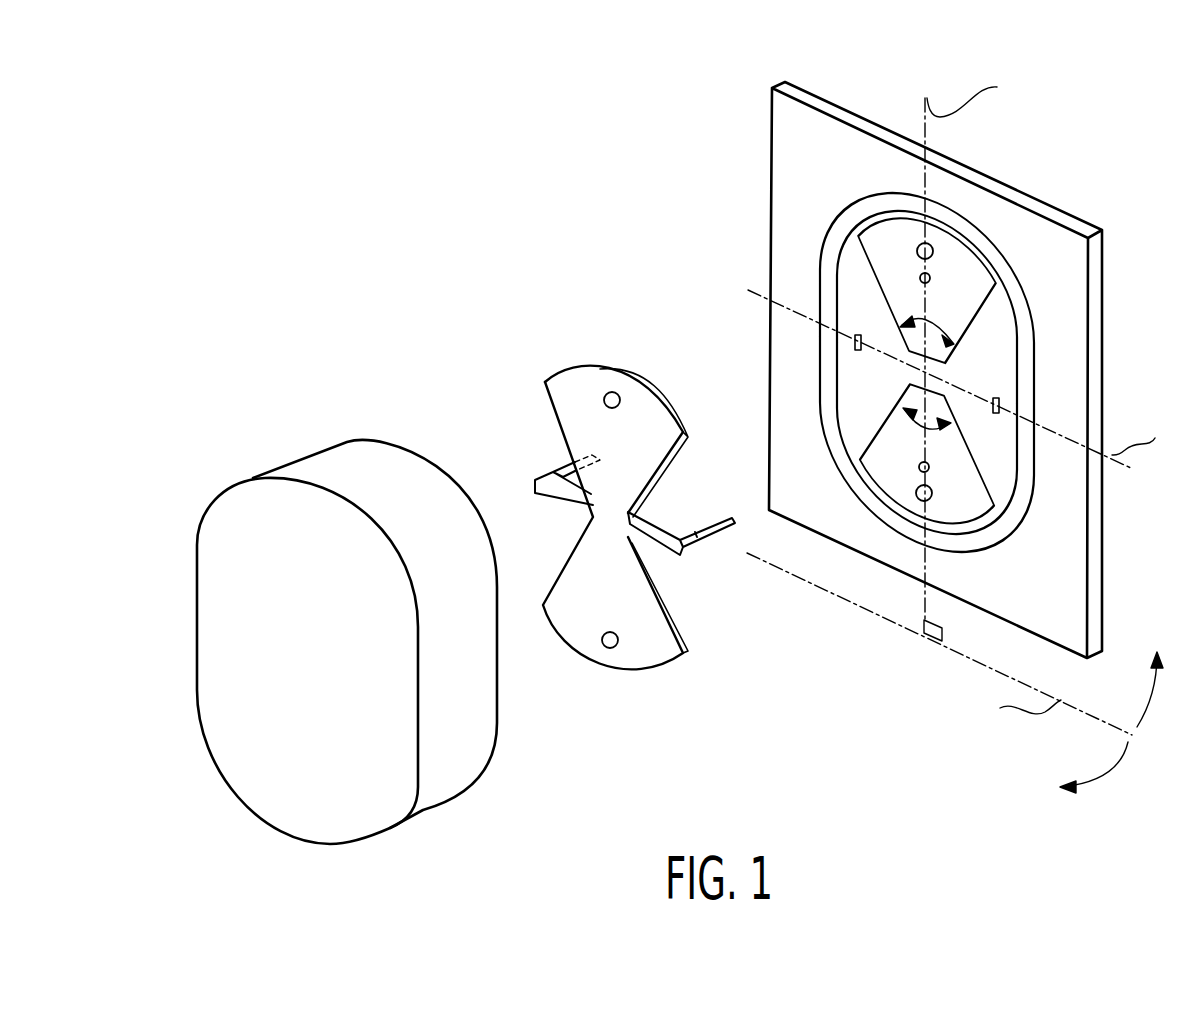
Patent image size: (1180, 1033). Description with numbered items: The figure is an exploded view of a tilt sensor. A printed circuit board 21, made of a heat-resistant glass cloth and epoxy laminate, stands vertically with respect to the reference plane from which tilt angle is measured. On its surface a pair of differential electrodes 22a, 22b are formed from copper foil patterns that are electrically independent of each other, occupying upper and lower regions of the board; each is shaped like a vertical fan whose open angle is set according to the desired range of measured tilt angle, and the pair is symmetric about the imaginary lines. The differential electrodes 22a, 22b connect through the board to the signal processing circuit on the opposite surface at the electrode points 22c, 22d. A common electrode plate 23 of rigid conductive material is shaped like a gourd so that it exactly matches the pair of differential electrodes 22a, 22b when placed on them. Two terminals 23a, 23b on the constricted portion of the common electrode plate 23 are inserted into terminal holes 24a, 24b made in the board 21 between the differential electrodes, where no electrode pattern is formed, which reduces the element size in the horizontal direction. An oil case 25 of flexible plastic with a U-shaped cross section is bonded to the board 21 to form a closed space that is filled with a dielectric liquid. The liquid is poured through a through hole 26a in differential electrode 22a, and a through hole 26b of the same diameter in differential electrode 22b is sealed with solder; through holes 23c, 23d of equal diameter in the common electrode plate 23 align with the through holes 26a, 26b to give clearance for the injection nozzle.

The printed circuit board 21 is at (1095, 258).
The differential electrode 22a is at (972, 298).
The differential electrode 22b is at (972, 518).
The electrode point 22c is at (917, 277).
The electrode point 22d is at (930, 465).
The common electrode plate 23 is at (612, 515).
The terminal 23a is at (570, 468).
The terminal 23b is at (717, 542).
The through hole 23c is at (612, 392).
The through hole 23d is at (612, 648).
The terminal hole 24a is at (859, 334).
The terminal hole 24b is at (996, 398).
The oil case 25 is at (488, 727).
The through hole 26a is at (937, 252).
The through hole 26b is at (923, 495).